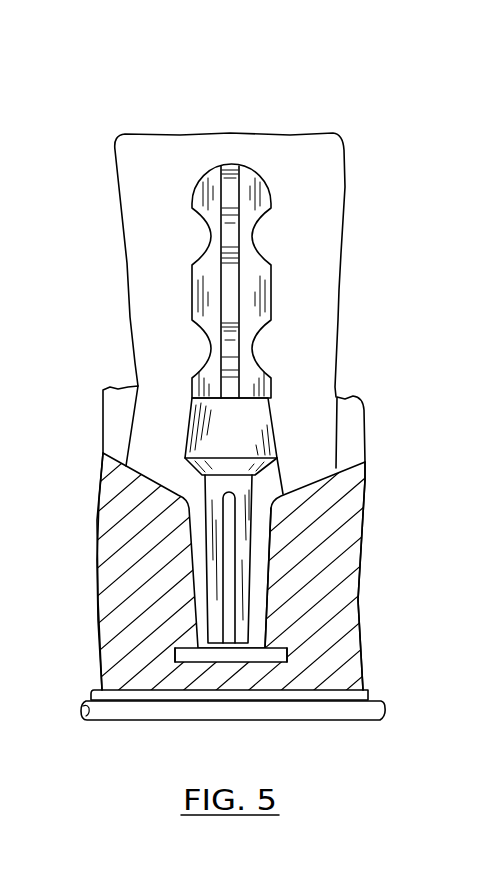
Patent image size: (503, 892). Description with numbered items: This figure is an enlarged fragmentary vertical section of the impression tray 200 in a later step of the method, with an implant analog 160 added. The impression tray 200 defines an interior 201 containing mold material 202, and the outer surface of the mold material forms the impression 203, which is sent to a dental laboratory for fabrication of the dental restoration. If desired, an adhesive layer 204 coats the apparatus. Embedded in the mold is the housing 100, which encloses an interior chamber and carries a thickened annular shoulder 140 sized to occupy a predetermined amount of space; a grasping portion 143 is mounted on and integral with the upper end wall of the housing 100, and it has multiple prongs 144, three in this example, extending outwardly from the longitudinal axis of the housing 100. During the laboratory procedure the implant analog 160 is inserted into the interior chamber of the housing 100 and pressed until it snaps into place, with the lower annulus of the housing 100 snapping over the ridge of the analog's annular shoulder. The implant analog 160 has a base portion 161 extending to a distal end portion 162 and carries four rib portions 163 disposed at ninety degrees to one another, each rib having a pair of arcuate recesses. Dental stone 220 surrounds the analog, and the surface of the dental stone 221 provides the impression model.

The housing 100 is at (262, 557).
The annular shoulder 140 is at (272, 483).
The grasping portion 143 is at (281, 655).
The prongs 144 is at (186, 654).
The implant analog 160 is at (270, 410).
The base portion 161 is at (272, 295).
The distal end portion 162 is at (235, 162).
The rib portions 163 is at (255, 200).
The impression tray 200 is at (323, 712).
The interior 201 is at (363, 607).
The mold material 202 is at (345, 520).
The impression 203 is at (348, 430).
The adhesive layer 204 is at (263, 590).
The dental stone 220 is at (300, 227).
The surface of the dental stone 221 is at (101, 507).